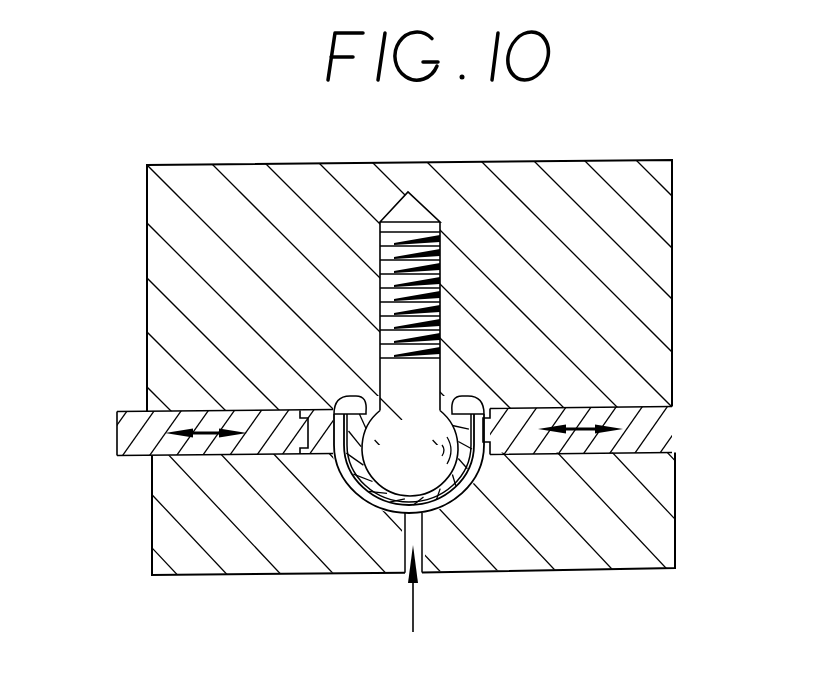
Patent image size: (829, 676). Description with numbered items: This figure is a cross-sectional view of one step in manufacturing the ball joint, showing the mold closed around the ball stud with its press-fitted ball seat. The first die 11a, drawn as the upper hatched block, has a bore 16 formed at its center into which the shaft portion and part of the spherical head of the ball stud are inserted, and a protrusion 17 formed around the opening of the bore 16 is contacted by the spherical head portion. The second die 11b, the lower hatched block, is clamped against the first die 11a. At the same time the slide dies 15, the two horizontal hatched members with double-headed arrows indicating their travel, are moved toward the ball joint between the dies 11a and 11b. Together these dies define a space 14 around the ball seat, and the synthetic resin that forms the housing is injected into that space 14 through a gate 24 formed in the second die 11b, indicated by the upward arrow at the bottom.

The first die 11a is at (672, 254).
The second die 11b is at (675, 520).
The space 14 is at (373, 498).
The slide dies 15 is at (117, 433).
The bore 16 is at (444, 378).
The protrusion 17 is at (318, 455).
The gate 24 is at (422, 565).